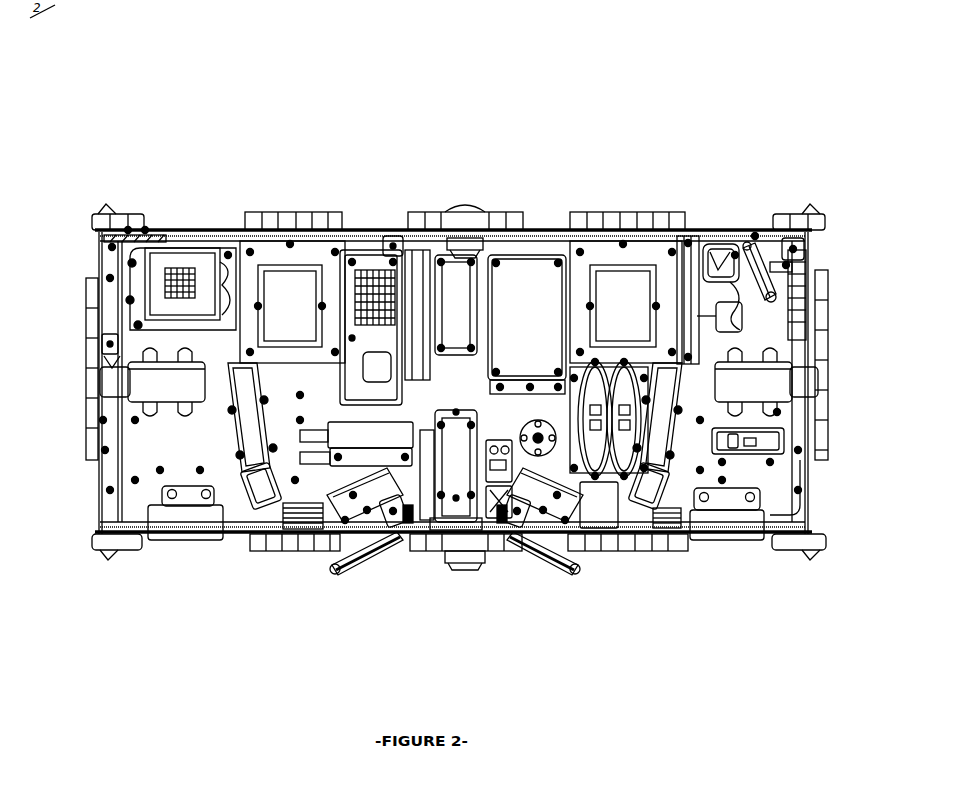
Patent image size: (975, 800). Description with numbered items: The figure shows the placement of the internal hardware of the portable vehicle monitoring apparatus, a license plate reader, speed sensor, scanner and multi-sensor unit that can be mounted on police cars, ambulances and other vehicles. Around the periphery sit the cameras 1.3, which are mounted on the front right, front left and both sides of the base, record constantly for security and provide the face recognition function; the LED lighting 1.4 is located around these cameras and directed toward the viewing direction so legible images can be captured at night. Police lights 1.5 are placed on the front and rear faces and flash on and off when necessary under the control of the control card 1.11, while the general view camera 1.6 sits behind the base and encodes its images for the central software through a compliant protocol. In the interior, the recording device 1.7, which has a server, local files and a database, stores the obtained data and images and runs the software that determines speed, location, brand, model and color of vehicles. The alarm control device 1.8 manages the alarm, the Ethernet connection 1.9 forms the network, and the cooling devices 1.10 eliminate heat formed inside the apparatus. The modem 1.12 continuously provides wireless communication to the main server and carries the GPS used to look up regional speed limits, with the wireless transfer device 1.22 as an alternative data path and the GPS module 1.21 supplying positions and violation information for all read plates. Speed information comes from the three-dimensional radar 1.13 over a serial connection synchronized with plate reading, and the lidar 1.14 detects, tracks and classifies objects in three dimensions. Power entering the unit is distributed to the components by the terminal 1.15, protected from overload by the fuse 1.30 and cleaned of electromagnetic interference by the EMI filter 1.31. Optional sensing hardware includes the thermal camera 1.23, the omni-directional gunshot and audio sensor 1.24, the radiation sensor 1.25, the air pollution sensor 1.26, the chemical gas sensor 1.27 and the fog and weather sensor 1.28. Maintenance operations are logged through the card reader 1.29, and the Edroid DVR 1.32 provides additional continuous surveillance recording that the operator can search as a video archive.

The camera 1.3 is at (170, 379).
The LED lighting 1.4 is at (812, 282).
The police lights 1.5 is at (268, 215).
The general view camera 1.6 is at (465, 205).
The recording device 1.7 is at (370, 290).
The alarm control device 1.8 is at (428, 262).
The Ethernet connection 1.9 is at (547, 290).
The cooling device 1.10 is at (298, 280).
The control card 1.11 is at (406, 250).
The modem 1.12 is at (398, 470).
The radar 1.13 is at (729, 540).
The lidar 1.14 is at (320, 468).
The terminal 1.15 is at (683, 262).
The GPS module 1.21 is at (183, 540).
The wireless transfer device 1.22 is at (583, 482).
The thermal camera 1.23 is at (428, 551).
The audio sensor 1.24 is at (499, 520).
The radiation sensor 1.25 is at (534, 458).
The air pollution sensor 1.26 is at (102, 342).
The chemical gas sensor 1.27 is at (757, 262).
The fog and weather sensor 1.28 is at (606, 551).
The card reader 1.29 is at (800, 439).
The fuse 1.30 is at (818, 251).
The EMI filter 1.31 is at (735, 255).
The Edroid DVR 1.32 is at (205, 275).